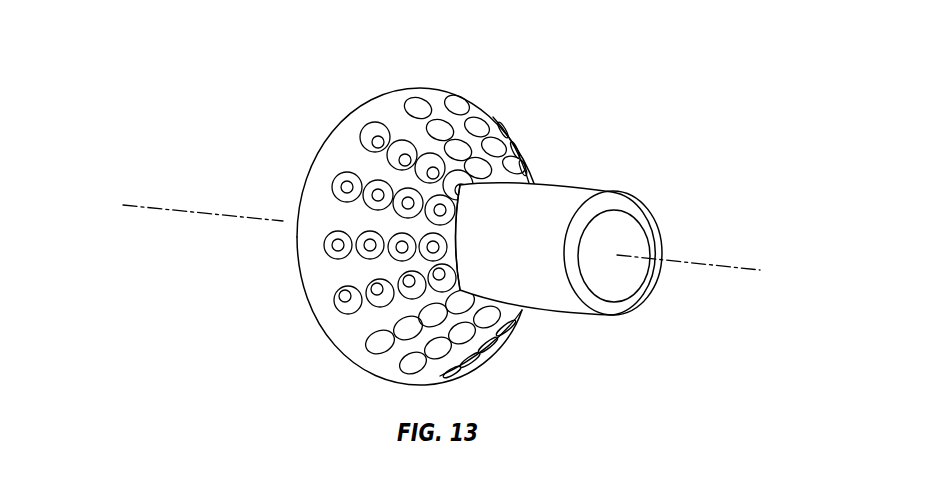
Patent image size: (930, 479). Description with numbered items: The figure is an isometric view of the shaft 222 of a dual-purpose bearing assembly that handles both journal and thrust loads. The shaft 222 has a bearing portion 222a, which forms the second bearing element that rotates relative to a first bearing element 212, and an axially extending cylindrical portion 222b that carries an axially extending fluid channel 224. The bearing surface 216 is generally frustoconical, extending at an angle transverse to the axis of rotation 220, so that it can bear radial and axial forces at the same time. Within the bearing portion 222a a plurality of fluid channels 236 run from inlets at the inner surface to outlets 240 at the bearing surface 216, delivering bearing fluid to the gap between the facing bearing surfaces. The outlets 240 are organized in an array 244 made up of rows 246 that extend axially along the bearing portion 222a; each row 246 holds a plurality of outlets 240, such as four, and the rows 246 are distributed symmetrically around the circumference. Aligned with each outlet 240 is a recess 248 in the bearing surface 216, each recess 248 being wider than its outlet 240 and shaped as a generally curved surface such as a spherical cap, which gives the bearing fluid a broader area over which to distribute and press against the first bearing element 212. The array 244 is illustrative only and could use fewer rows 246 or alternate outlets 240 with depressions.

The first bearing element 212 is at (441, 214).
The bearing surface 216 is at (441, 92).
The axis of rotation 220 is at (715, 268).
The shaft 222 is at (481, 214).
The bearing portion of shaft 222a is at (338, 146).
The cylindrical portion of shaft 222b is at (588, 188).
The fluid channel 224 is at (616, 244).
The fluid channels 236 is at (343, 306).
The outlets 240 is at (328, 243).
The array 244 is at (385, 117).
The rows 246 is at (327, 183).
The recesses 248 is at (373, 134).